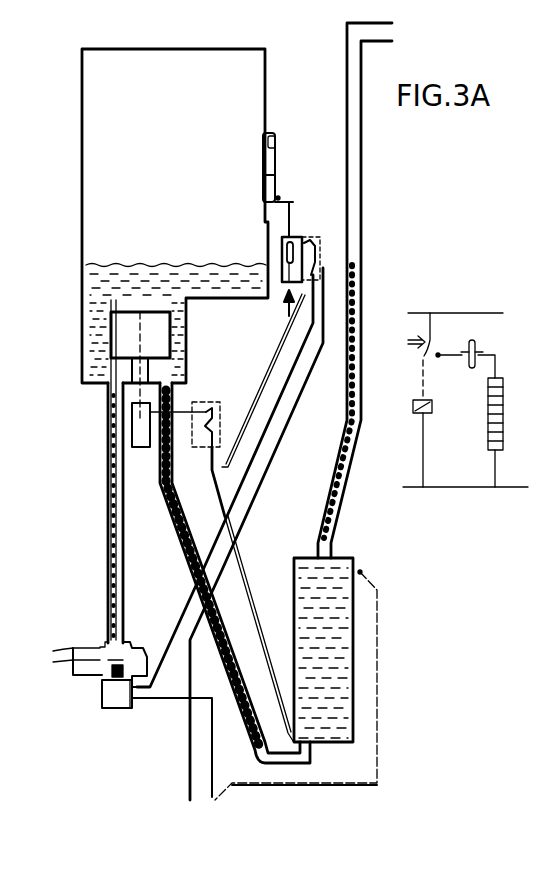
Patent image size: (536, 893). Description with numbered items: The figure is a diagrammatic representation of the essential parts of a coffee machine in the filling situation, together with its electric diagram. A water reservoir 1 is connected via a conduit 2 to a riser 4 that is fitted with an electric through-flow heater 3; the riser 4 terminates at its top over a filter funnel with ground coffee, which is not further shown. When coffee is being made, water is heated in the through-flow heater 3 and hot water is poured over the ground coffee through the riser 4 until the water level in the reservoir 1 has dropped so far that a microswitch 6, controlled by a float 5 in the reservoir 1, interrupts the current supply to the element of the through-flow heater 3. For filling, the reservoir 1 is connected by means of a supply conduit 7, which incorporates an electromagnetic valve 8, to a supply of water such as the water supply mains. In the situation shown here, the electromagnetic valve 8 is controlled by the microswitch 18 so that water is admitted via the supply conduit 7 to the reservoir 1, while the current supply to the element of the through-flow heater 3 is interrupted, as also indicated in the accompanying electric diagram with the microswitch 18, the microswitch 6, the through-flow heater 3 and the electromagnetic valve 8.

The water reservoir 1 is at (96, 165).
The conduit 2 is at (188, 558).
The electric through-flow heater 3 is at (296, 600).
The riser 4 is at (357, 183).
The float 5 is at (122, 333).
The microswitch 6 is at (221, 402).
The supply conduit 7 is at (108, 518).
The electromagnetic valve 8 is at (92, 680).
The microswitch 18 is at (297, 238).